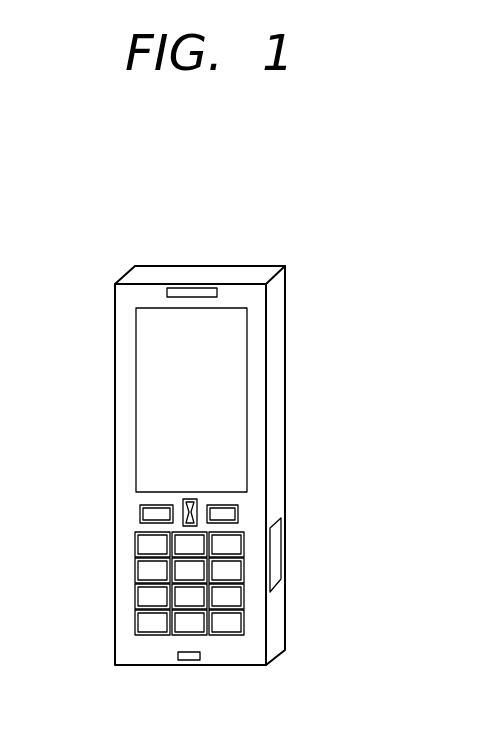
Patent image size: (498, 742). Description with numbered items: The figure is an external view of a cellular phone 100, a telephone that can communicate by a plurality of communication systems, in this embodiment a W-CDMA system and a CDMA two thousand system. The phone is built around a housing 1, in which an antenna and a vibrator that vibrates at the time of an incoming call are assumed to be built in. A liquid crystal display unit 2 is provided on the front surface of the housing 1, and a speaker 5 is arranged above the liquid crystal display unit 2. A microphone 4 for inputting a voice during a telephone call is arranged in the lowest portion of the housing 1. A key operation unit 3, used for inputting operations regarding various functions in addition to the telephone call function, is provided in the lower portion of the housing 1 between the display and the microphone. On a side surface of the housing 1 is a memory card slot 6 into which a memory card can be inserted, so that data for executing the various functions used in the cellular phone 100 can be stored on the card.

The cellular phone 100 is at (217, 155).
The housing 1 is at (277, 320).
The liquid crystal display unit 2 is at (231, 406).
The key operation unit 3 is at (105, 652).
The microphone 4 is at (187, 657).
The speaker 5 is at (188, 291).
The memory card slot 6 is at (275, 553).